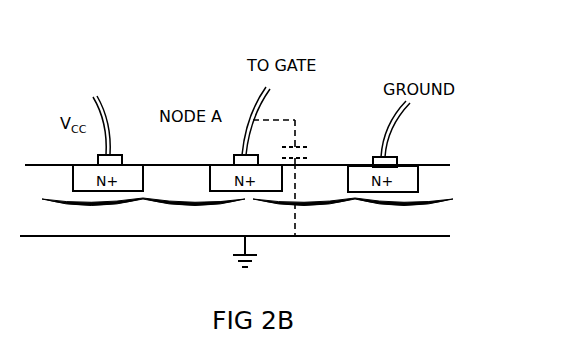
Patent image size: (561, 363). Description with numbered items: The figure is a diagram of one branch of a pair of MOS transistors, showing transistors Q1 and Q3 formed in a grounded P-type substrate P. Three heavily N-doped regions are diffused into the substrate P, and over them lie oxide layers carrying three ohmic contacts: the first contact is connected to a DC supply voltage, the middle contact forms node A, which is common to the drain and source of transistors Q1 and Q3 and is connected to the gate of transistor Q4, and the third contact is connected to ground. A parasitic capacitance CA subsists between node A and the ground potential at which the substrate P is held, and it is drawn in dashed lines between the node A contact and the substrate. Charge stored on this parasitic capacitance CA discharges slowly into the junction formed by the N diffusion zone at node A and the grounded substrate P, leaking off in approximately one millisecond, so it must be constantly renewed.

The MOS transistor Q1 is at (143, 216).
The MOS transistor Q3 is at (353, 218).
The MOS transistor Q4 is at (286, 164).
The parasitic capacitance CA is at (304, 146).
The P-type substrate P is at (235, 219).